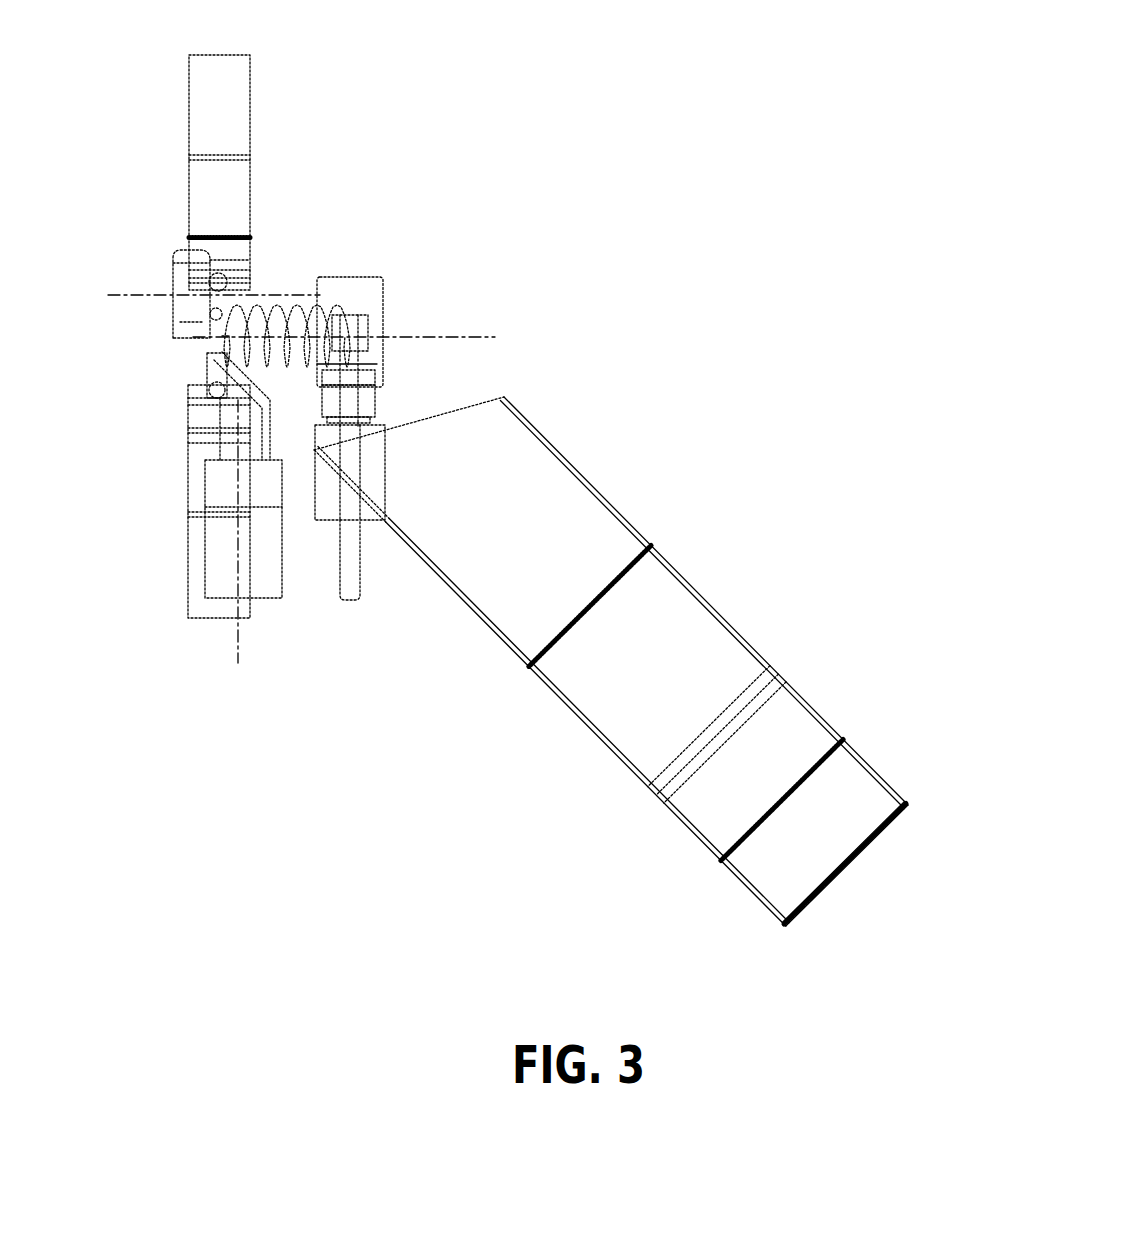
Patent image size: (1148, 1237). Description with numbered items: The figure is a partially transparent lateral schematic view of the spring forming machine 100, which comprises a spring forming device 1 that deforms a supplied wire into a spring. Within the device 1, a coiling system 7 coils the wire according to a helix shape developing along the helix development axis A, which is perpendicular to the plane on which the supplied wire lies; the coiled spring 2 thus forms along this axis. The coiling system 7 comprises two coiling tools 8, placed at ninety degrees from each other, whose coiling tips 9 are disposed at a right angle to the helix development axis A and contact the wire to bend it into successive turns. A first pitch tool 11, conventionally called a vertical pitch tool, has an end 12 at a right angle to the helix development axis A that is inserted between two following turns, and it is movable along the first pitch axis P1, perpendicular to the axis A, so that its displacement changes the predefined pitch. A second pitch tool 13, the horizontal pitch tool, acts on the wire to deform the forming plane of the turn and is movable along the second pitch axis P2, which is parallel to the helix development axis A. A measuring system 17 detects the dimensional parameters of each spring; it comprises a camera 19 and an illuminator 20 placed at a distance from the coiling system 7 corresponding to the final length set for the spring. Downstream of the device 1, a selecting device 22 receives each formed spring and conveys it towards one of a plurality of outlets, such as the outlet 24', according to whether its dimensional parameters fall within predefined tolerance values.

The spring forming machine 100 is at (555, 185).
The spring forming device 1 is at (345, 200).
The coiling system 7 is at (152, 160).
The coiling tool 8 is at (242, 195).
The spring 2 is at (277, 307).
The second pitch tool 13 is at (188, 292).
The coiling tip 9 is at (213, 297).
The end of the first pitch tool 12 is at (232, 443).
The first pitch tool 11 is at (227, 567).
The measuring system 17 is at (365, 260).
The illuminator 20 is at (365, 297).
The camera 19 is at (367, 387).
The selecting device 22 is at (570, 520).
The outlet 24' is at (751, 842).
The first pitch axis P1 is at (237, 548).
The second pitch axis P2 is at (214, 308).
The helix development axis A is at (358, 329).